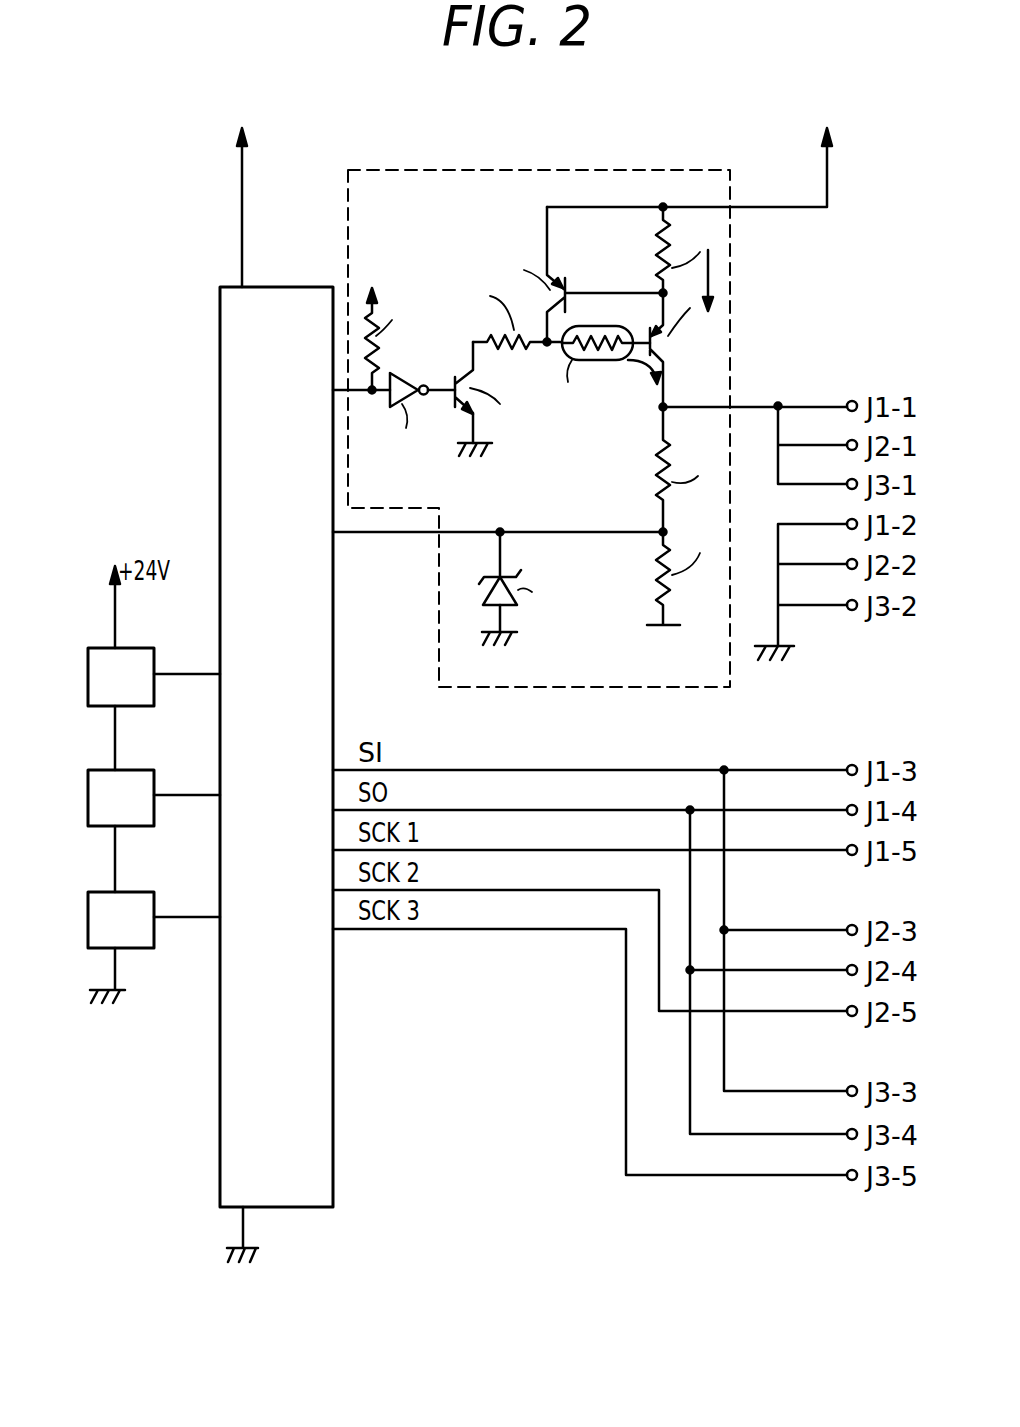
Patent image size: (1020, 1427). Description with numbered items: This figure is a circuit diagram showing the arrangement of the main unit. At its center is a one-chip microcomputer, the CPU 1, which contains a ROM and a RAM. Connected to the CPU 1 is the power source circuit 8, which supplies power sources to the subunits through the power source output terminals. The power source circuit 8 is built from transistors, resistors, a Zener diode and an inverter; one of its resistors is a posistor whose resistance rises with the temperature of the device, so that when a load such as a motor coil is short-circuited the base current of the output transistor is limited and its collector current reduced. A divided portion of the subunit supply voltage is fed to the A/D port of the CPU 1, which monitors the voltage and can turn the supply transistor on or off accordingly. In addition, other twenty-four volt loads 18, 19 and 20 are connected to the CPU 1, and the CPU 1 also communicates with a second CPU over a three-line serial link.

The one-chip microcomputer (CPU) 1 is at (220, 323).
The power source circuit 8 is at (387, 168).
The load 18 is at (146, 648).
The load 19 is at (146, 770).
The load 20 is at (146, 892).